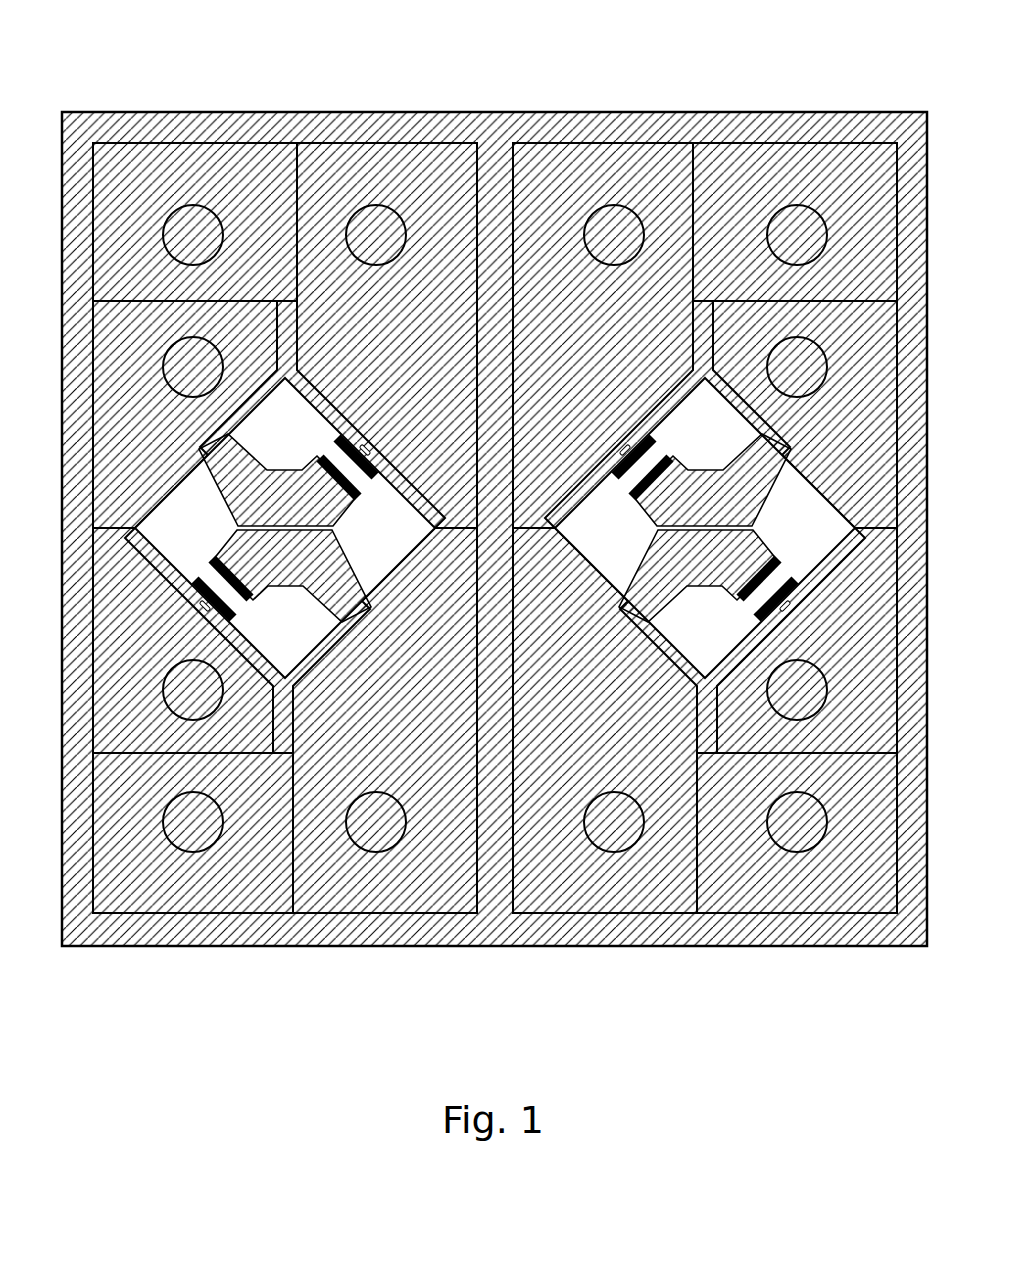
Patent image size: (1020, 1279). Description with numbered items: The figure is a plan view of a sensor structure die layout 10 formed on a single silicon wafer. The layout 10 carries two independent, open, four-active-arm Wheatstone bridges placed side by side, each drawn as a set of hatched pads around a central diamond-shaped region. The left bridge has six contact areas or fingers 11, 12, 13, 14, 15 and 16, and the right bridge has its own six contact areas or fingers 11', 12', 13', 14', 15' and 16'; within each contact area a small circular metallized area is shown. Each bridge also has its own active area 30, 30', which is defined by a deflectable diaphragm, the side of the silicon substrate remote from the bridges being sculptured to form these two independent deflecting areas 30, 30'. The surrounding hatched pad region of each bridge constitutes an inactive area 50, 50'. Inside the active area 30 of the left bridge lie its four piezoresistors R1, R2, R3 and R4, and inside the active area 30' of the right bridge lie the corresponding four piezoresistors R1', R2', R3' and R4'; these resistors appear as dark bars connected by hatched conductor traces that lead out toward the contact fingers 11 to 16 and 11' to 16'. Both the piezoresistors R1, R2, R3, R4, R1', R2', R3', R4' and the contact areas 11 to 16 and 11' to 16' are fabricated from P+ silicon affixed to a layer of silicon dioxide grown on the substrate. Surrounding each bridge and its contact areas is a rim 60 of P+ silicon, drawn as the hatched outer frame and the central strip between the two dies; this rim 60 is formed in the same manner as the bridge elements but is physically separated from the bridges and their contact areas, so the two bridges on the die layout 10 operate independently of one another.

The sensor structure die layout 10 is at (218, 98).
The rim 60 is at (525, 112).
The inactive area 50 is at (285, 595).
The inactive area 50' is at (705, 595).
The contact area or finger 11 is at (385, 720).
The contact area or finger 12 is at (193, 833).
The contact area or finger 13 is at (183, 640).
The contact area or finger 14 is at (387, 335).
The contact area or finger 15 is at (195, 222).
The contact area or finger 16 is at (185, 414).
The active area 30 is at (285, 528).
The contact area or finger 11' is at (605, 720).
The contact area or finger 12' is at (797, 833).
The contact area or finger 13' is at (807, 640).
The contact area or finger 14' is at (603, 335).
The contact area or finger 15' is at (795, 222).
The contact area or finger 16' is at (805, 414).
The active area 30' is at (705, 528).
The piezoresistor R1 is at (291, 581).
The piezoresistor R2 is at (243, 617).
The piezoresistor R3 is at (364, 506).
The piezoresistor R4 is at (287, 474).
The piezoresistor R1' is at (722, 566).
The piezoresistor R2' is at (746, 613).
The piezoresistor R3' is at (703, 466).
The piezoresistor R4' is at (685, 465).